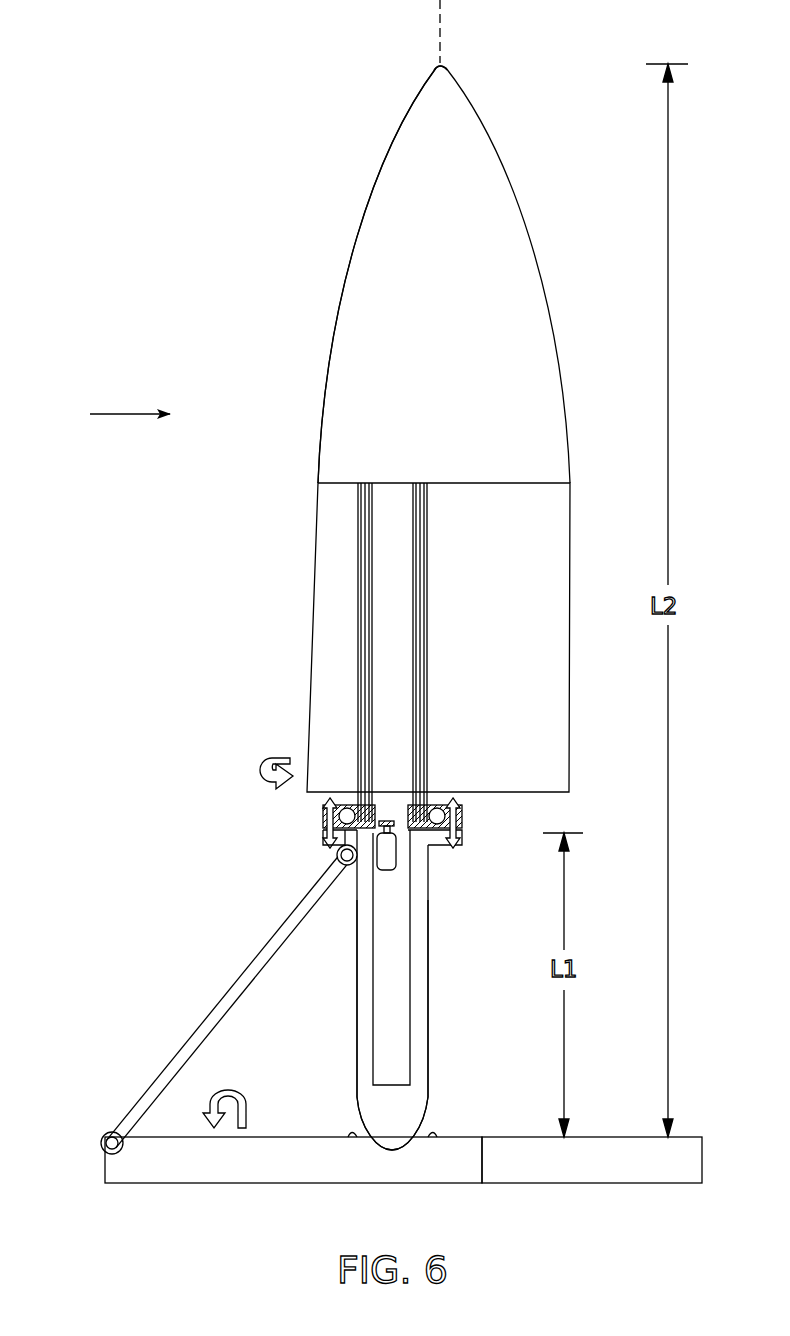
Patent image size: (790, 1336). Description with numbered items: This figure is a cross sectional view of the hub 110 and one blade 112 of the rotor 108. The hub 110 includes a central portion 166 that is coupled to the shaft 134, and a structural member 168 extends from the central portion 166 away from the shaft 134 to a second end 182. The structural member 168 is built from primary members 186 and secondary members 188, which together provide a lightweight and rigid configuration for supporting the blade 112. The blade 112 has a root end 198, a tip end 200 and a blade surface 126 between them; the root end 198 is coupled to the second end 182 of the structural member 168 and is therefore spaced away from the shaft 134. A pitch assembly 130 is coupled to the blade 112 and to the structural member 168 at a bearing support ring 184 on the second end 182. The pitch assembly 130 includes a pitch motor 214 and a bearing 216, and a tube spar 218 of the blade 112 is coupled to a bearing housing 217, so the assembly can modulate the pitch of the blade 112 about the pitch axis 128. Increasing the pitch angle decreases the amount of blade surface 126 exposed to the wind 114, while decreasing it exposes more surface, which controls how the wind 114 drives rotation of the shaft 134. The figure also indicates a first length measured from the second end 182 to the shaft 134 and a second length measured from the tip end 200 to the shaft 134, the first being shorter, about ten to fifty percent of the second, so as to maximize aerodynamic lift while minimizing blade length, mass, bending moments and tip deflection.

The rotor 108 is at (118, 538).
The hub 110 is at (225, 448).
The blade 112 is at (367, 200).
The wind 114 is at (133, 413).
The blade surface 126 is at (345, 318).
The pitch axis 128 is at (445, 22).
The pitch assembly 130 is at (323, 812).
The shaft 134 is at (622, 1168).
The central portion 166 is at (222, 1168).
The structural member 168 is at (345, 987).
The second end 182 is at (455, 848).
The bearing support ring 184 is at (462, 840).
The primary member 186 is at (365, 1055).
The secondary member 188 is at (150, 1076).
The root end 198 is at (571, 788).
The tip end 200 is at (437, 66).
The pitch motor 214 is at (397, 860).
The bearing 216 is at (323, 830).
The bearing housing 217 is at (338, 858).
The tube spar 218 is at (355, 680).